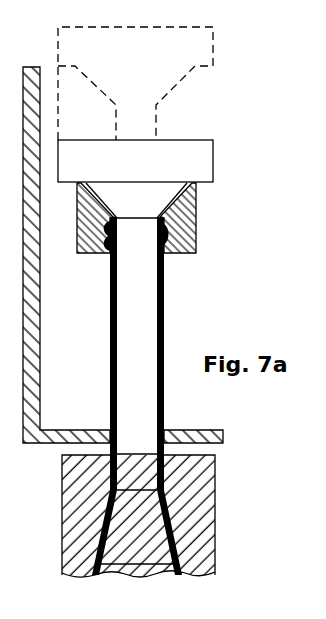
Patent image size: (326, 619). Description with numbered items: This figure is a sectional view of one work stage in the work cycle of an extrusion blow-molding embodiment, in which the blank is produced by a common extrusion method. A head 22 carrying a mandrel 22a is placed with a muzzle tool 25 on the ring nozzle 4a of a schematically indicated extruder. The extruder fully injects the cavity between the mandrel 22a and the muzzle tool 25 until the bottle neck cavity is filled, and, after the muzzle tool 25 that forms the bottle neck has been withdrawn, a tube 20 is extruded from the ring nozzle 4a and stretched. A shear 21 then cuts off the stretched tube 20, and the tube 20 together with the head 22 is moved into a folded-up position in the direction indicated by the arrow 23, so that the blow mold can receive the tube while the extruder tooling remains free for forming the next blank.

The ring nozzle 4a is at (204, 491).
The tube 20 is at (165, 315).
The shear 21 is at (215, 436).
The head 22 is at (205, 165).
The mandrel 22a is at (104, 255).
The arrow 23 is at (325, 75).
The muzzle tool 25 is at (195, 220).